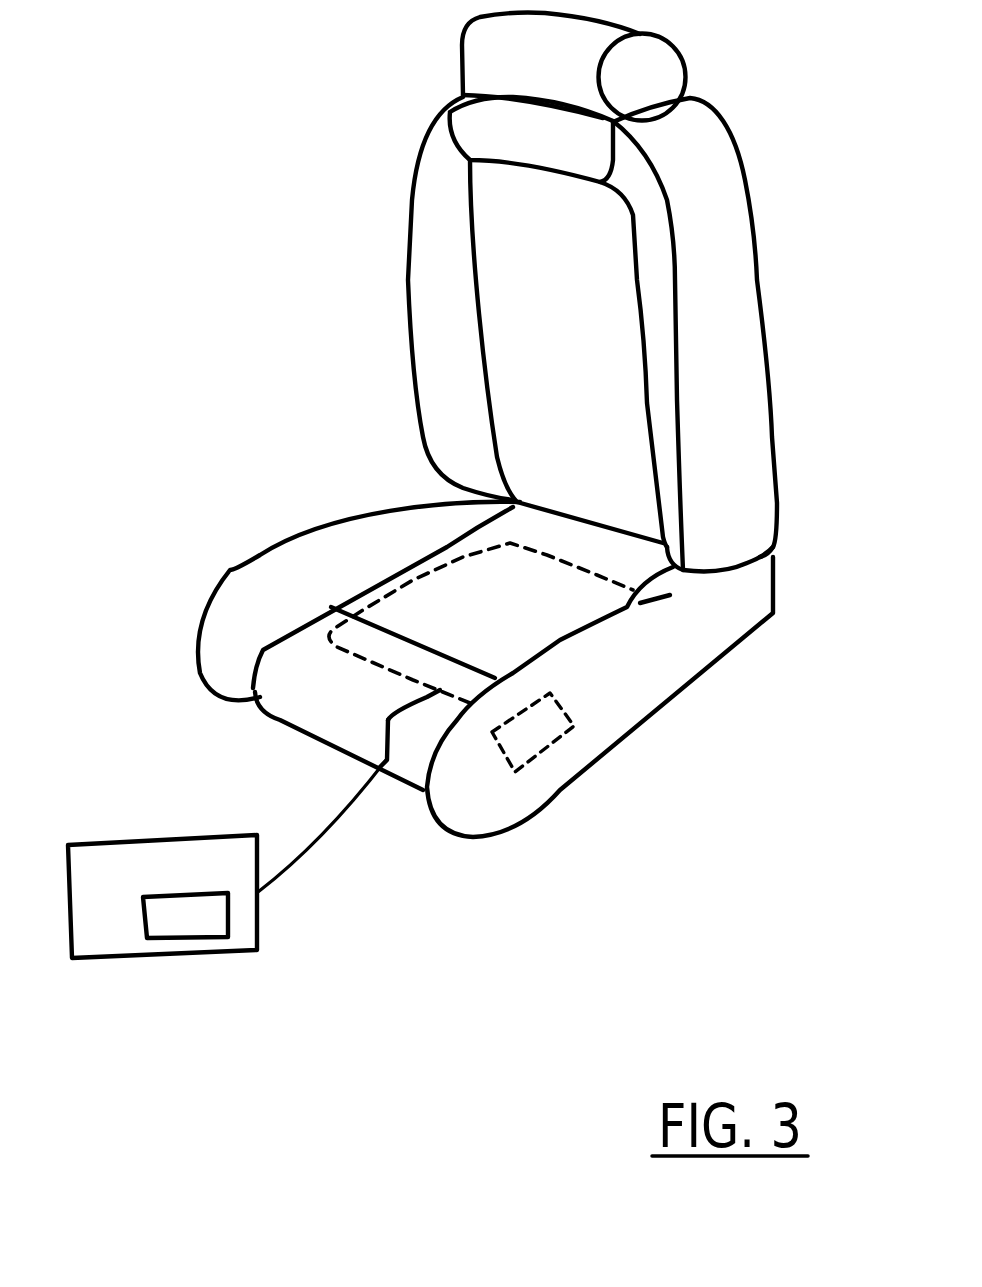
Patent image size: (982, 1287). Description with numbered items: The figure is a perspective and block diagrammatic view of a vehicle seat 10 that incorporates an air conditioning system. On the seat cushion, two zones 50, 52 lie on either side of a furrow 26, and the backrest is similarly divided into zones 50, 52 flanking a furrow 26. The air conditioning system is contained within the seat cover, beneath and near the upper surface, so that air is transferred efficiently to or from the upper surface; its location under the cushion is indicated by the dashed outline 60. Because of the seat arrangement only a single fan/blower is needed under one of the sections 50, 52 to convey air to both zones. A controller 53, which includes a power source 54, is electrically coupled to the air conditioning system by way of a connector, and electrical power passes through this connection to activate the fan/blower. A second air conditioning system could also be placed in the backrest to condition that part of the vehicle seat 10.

The vehicle seat 10 is at (740, 278).
The furrow 26 is at (577, 278).
The zone 50 is at (508, 385).
The zone 52 is at (523, 234).
The controller 53 is at (115, 937).
The power source 54 is at (207, 927).
The switch 60 is at (527, 753).